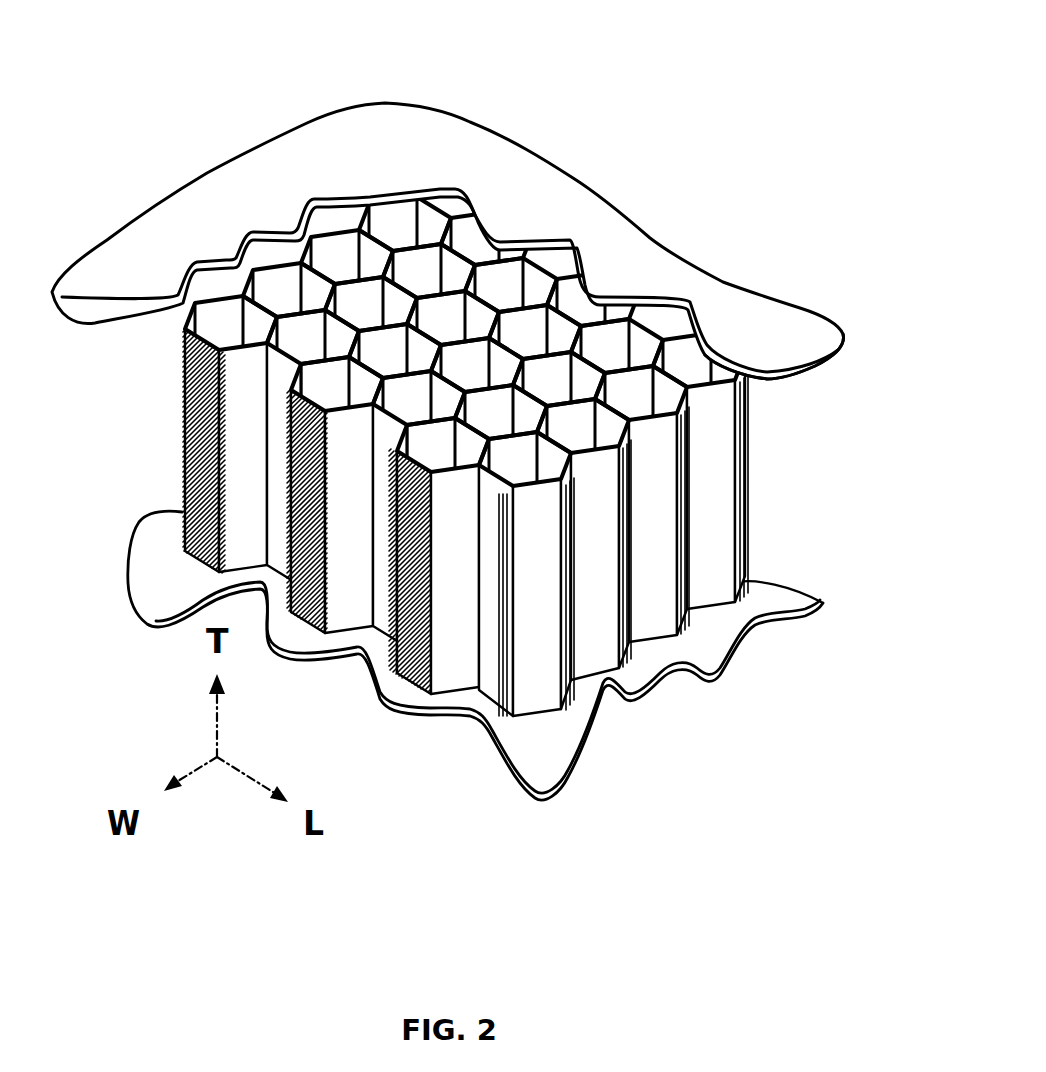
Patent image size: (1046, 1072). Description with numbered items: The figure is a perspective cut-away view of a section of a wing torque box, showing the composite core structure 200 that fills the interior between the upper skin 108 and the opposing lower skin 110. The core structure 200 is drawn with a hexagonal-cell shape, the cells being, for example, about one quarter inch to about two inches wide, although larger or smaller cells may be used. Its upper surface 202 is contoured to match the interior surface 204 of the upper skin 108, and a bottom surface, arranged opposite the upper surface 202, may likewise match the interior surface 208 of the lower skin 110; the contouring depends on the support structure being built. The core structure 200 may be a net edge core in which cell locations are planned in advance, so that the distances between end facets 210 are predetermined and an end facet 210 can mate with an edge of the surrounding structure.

The upper skin 108 is at (478, 236).
The lower skin 110 is at (545, 682).
The core structure 200 is at (482, 373).
The upper surface 202 is at (307, 238).
The interior surface 204 is at (808, 381).
The interior surface 208 is at (793, 597).
The end facet 210 is at (198, 460).